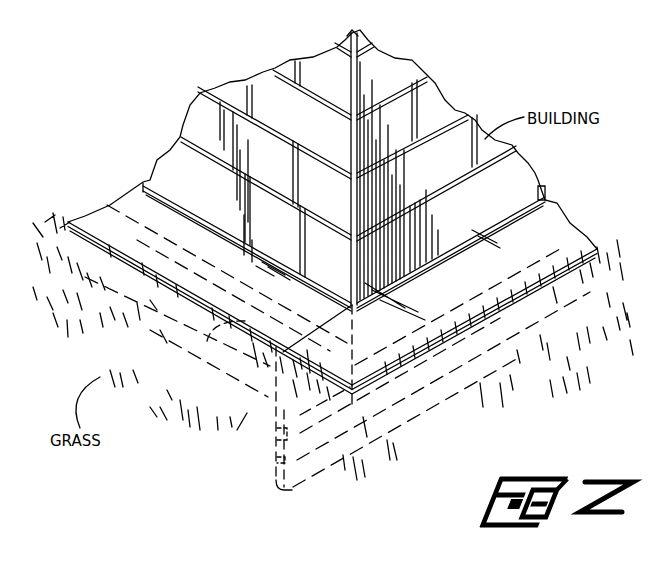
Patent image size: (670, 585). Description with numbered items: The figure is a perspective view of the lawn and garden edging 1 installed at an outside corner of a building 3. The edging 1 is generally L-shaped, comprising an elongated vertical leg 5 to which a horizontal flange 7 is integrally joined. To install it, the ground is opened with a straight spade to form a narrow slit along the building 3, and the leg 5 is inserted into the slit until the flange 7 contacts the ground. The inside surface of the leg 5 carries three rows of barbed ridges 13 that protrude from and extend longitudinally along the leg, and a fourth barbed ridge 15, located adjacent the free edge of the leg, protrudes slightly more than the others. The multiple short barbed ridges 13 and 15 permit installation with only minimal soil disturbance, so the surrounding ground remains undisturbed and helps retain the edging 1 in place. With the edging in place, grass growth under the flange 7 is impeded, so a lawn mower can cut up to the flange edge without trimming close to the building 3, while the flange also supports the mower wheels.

The lawn and garden edging 1 is at (568, 202).
The building 3 is at (408, 62).
The vertical leg 5 is at (306, 486).
The horizontal flange 7 is at (463, 293).
The barbed ridges 13 is at (207, 341).
The fourth barbed ridge 15 is at (496, 371).